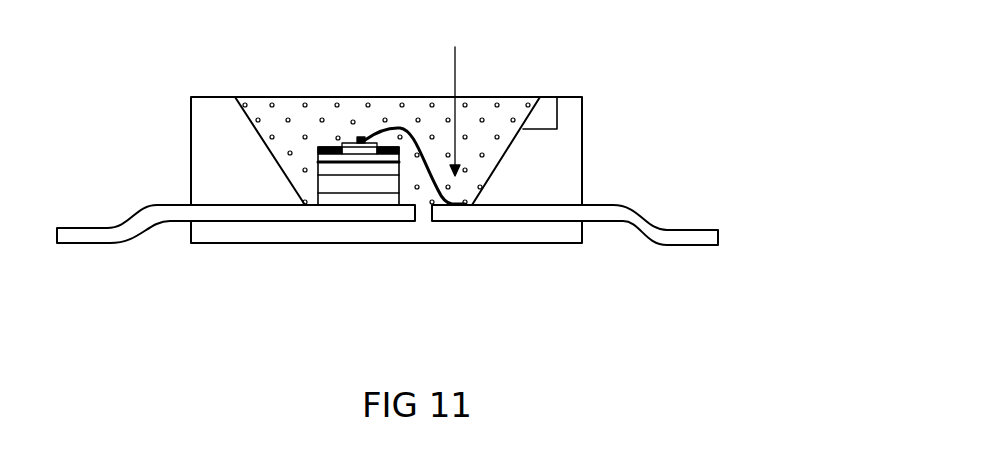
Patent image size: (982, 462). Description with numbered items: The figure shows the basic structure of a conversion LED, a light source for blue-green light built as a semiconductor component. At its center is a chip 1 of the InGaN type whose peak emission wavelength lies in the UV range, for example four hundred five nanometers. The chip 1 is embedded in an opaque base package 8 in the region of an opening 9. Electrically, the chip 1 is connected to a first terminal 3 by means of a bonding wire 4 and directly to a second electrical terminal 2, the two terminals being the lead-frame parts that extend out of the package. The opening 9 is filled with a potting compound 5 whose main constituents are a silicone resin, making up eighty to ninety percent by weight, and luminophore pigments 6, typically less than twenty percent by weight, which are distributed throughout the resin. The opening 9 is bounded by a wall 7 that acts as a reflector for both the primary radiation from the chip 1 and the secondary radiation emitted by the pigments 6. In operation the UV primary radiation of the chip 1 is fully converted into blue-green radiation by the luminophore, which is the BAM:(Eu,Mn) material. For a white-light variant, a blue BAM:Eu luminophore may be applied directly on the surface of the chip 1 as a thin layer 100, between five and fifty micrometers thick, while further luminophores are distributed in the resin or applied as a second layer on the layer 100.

The layer 100 is at (327, 143).
The chip 1 is at (298, 172).
The second electrical terminal 2 is at (250, 210).
The first terminal 3 is at (559, 212).
The bonding wire 4 is at (402, 128).
The potting compound 5 is at (513, 105).
The luminophore pigments 6 is at (338, 105).
The wall 7 is at (557, 97).
The opaque base package 8 is at (563, 143).
The opening 9 is at (454, 94).